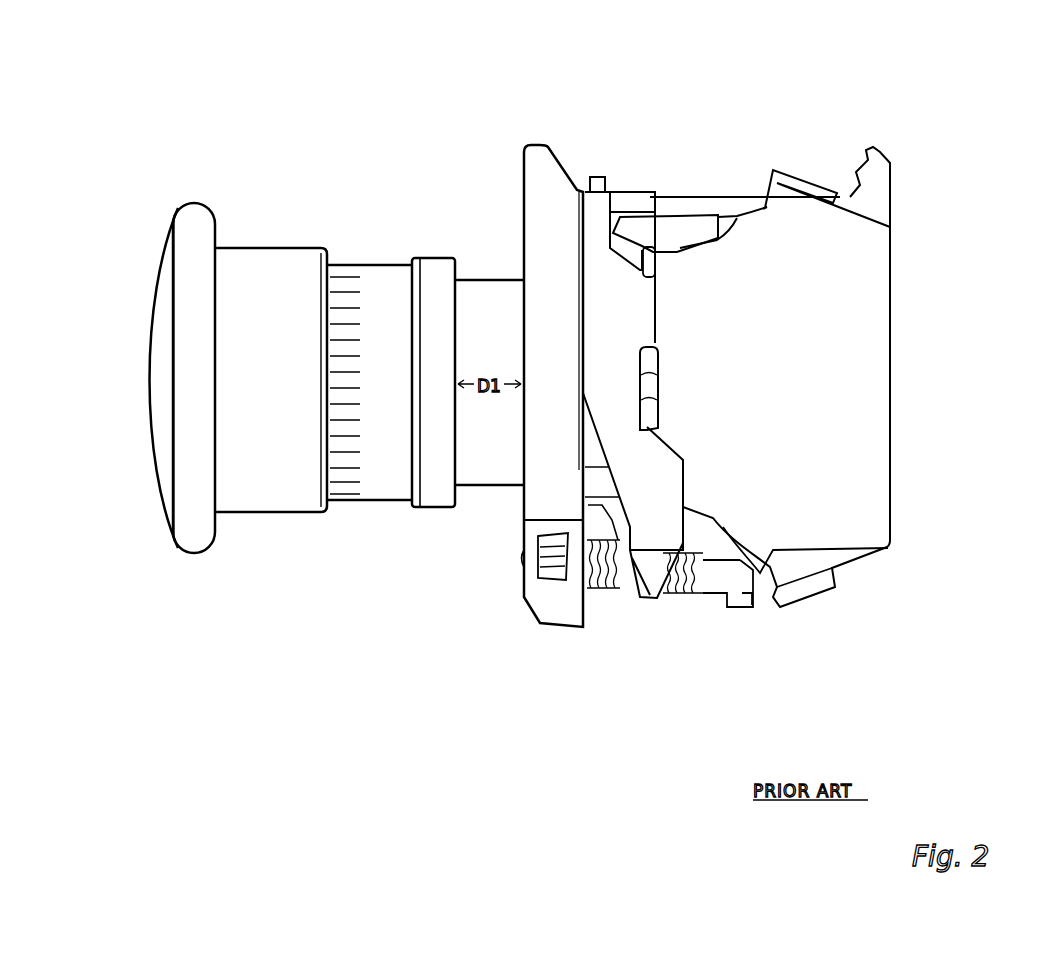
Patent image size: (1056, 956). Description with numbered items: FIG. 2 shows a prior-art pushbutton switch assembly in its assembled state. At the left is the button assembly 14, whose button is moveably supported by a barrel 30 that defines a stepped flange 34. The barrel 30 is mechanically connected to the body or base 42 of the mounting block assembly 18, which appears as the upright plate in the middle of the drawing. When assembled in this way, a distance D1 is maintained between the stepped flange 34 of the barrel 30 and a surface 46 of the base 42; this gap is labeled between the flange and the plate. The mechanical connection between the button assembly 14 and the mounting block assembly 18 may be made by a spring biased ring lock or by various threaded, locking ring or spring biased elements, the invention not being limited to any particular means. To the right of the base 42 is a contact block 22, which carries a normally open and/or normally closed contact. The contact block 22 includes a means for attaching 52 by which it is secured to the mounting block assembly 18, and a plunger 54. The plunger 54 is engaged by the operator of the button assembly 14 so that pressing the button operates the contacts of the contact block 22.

The button assembly 14 is at (284, 149).
The mounting block assembly 18 is at (584, 148).
The contact block 22 is at (800, 386).
The barrel 30 is at (381, 290).
The stepped flange 34 is at (457, 273).
The base 42 is at (627, 335).
The surface 46 is at (518, 462).
The means for attaching 52 is at (637, 233).
The plunger 54 is at (655, 388).